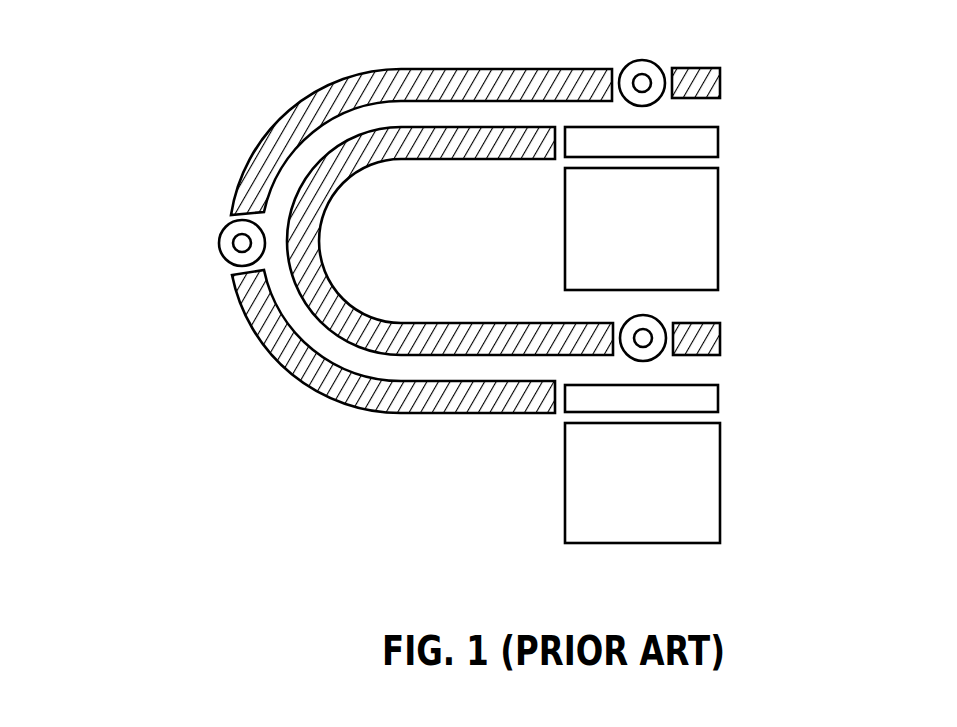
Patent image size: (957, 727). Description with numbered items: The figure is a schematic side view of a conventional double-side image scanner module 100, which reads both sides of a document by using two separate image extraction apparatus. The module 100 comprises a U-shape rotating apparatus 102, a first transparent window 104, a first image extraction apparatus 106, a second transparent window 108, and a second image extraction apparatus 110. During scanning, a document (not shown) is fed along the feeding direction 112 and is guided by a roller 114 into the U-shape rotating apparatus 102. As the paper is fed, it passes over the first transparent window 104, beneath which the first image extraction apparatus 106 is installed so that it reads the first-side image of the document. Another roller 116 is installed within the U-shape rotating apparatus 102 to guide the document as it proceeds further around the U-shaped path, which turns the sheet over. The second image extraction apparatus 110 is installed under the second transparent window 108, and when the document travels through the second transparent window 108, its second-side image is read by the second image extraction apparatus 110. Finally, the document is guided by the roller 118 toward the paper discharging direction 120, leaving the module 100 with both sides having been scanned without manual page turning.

The double-side image scanner module 100 is at (941, 70).
The U-shape rotating apparatus 102 is at (269, 115).
The first transparent window 104 is at (703, 142).
The first image extraction apparatus 106 is at (697, 258).
The second transparent window 108 is at (703, 397).
The second image extraction apparatus 110 is at (698, 495).
The feeding direction 112 is at (720, 112).
The roller 114 is at (655, 64).
The roller 116 is at (227, 238).
The roller 118 is at (653, 325).
The paper discharging direction 120 is at (712, 368).